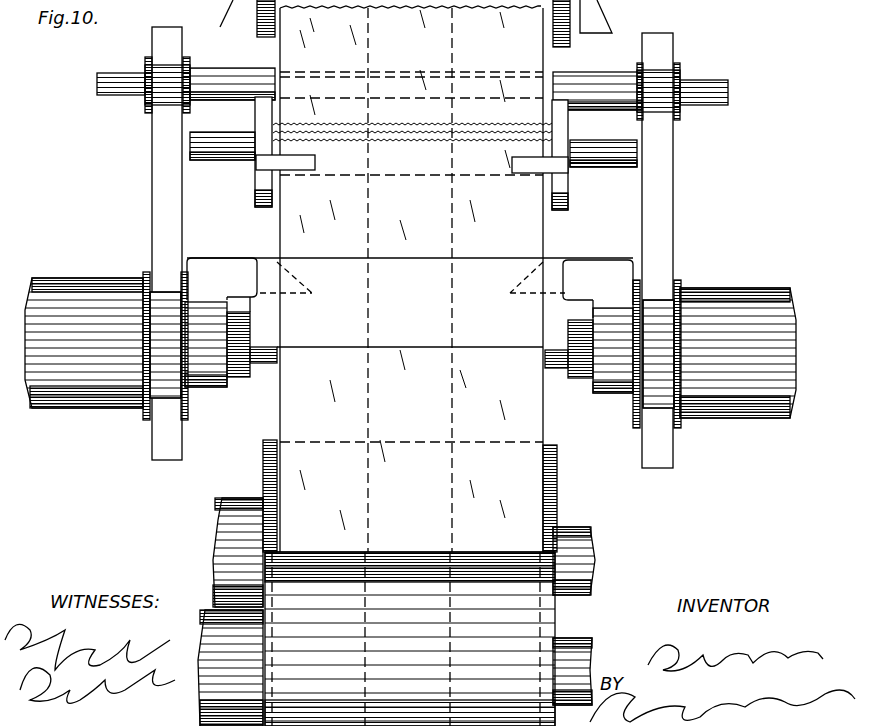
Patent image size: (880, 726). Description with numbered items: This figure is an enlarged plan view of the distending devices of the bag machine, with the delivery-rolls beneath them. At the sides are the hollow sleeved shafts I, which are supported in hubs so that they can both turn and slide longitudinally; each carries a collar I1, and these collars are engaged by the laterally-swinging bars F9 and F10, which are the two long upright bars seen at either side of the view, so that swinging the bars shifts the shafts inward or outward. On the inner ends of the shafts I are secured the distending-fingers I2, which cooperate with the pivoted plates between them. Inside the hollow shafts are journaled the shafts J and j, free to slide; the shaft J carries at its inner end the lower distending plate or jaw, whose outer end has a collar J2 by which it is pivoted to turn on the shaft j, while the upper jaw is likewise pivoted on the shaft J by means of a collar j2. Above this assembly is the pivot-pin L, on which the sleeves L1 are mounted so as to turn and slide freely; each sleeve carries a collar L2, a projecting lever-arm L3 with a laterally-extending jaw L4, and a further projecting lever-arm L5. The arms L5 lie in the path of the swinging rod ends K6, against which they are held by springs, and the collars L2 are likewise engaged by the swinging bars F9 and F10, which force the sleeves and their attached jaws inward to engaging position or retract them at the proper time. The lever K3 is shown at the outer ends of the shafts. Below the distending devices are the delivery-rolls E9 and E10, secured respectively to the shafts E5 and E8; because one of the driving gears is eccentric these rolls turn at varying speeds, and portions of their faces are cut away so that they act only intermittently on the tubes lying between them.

The pivot-pin L is at (113, 80).
The sleeve L1 is at (230, 80).
The collar L2 is at (172, 85).
The projecting lever-arm L3 is at (262, 122).
The laterally-extending jaw L4 is at (302, 159).
The projecting lever-arm L5 is at (260, 16).
The swinging rod end K6 is at (240, 158).
The swinging bar F10 is at (167, 243).
The swinging bar F9 is at (657, 250).
The distending-finger I2 is at (410, 288).
The sleeved shaft I is at (409, 347).
The collar I1 is at (172, 350).
The lever K3 is at (410, 348).
The shaft j is at (440, 284).
The collar j2 is at (236, 380).
The shaft J is at (265, 368).
The collar J2 is at (586, 378).
The delivery-roll E9 is at (560, 470).
The shaft E5 is at (587, 556).
The shaft E8 is at (565, 662).
The delivery-roll E10 is at (410, 639).